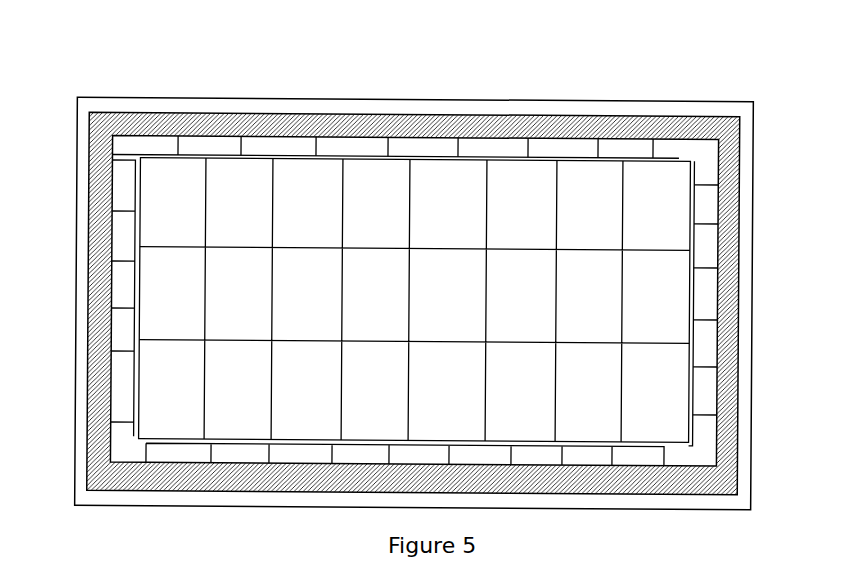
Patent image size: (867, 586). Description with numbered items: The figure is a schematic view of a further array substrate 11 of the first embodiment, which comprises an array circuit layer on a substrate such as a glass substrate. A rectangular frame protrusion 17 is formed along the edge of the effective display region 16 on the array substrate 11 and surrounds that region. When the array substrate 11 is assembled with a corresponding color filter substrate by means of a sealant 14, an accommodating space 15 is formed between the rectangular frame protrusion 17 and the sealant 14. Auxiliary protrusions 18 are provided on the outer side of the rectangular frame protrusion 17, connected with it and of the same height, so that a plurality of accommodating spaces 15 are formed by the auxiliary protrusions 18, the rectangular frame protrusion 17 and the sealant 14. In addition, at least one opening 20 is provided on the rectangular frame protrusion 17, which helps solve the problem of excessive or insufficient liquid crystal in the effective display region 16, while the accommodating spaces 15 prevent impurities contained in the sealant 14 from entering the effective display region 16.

The array substrate 11 is at (753, 243).
The sealant 14 is at (729, 142).
The accommodating space 15 is at (265, 145).
The effective display region 16 is at (649, 332).
The rectangular frame protrusion 17 is at (694, 400).
The auxiliary protrusion 18 is at (712, 183).
The opening 20 is at (140, 150).